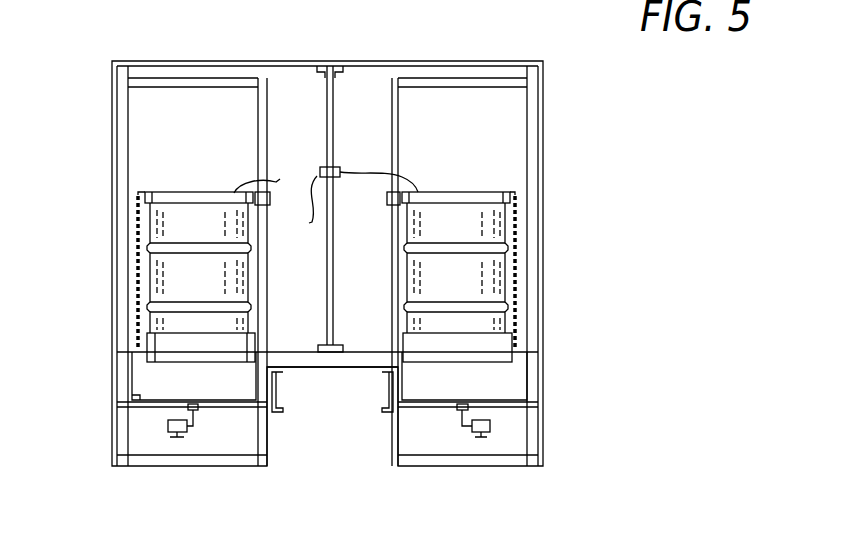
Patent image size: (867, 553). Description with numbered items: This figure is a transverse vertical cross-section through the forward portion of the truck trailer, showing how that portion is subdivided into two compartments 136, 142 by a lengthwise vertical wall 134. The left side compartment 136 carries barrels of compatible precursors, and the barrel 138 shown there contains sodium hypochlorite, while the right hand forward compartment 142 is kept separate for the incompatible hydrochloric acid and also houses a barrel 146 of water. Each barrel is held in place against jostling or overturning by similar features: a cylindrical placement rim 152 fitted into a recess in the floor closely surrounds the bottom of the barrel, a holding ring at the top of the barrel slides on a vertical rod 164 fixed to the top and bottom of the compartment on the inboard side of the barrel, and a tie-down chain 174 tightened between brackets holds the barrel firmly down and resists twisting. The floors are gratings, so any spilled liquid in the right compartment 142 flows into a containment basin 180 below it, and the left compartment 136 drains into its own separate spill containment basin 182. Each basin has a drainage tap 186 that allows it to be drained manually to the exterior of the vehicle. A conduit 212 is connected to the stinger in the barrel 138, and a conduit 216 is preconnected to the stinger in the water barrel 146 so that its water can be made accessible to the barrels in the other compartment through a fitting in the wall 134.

The lengthwise vertical wall 134 is at (334, 118).
The left side compartment 136 is at (196, 103).
The barrel 138 is at (177, 273).
The right hand forward compartment 142 is at (478, 108).
The barrel of water 146 is at (490, 284).
The cylindrical placement rim 152 is at (491, 348).
The vertical rod 164 is at (268, 108).
The tie-down chain 174 is at (520, 232).
The containment basin 180 is at (507, 385).
The spill containment basin 182 is at (150, 377).
The drainage tap 186 is at (168, 425).
The conduit 212 is at (240, 182).
The conduit 216 is at (419, 183).